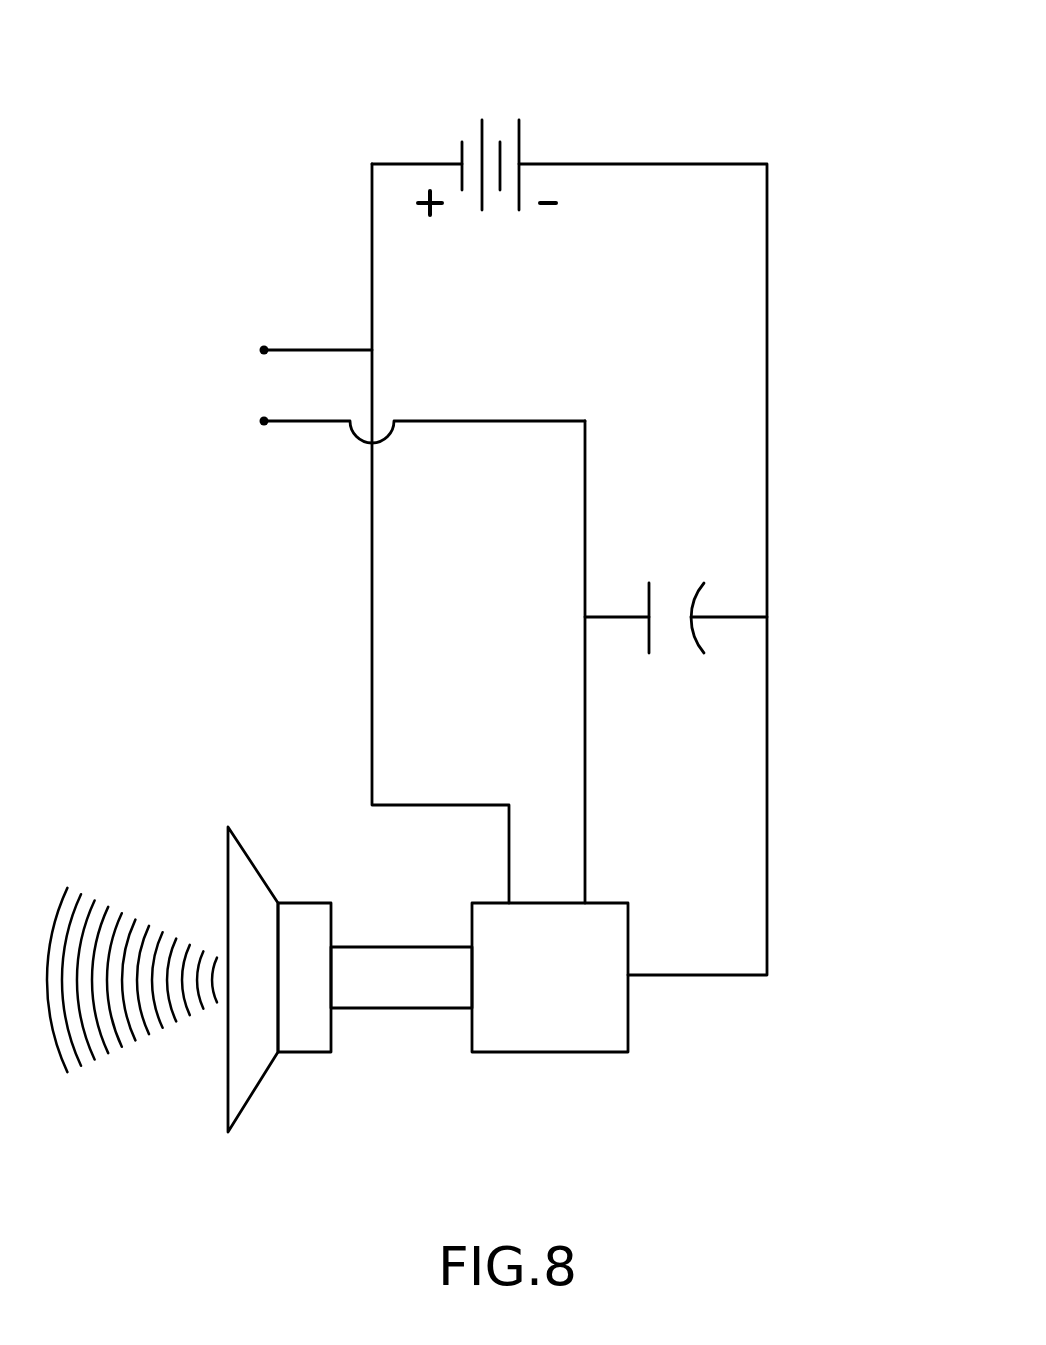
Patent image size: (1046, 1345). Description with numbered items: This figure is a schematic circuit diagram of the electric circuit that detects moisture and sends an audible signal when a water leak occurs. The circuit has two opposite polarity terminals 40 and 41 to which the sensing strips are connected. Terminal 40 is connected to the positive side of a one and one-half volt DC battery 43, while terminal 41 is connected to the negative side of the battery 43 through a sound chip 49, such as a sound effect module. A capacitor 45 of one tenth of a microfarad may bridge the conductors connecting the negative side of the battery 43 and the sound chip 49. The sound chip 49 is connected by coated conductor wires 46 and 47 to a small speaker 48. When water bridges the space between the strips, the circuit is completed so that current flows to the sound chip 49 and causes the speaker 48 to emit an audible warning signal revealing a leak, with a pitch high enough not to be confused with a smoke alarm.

The terminal 40 is at (262, 350).
The terminal 41 is at (262, 421).
The battery 43 is at (482, 120).
The capacitor 45 is at (692, 618).
The coated conductor wire 46 is at (400, 1008).
The coated conductor wire 47 is at (413, 947).
The speaker 48 is at (243, 1037).
The sound chip 49 is at (577, 1010).